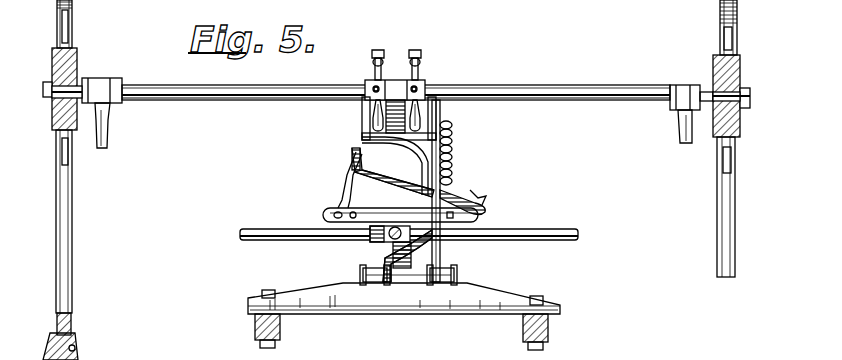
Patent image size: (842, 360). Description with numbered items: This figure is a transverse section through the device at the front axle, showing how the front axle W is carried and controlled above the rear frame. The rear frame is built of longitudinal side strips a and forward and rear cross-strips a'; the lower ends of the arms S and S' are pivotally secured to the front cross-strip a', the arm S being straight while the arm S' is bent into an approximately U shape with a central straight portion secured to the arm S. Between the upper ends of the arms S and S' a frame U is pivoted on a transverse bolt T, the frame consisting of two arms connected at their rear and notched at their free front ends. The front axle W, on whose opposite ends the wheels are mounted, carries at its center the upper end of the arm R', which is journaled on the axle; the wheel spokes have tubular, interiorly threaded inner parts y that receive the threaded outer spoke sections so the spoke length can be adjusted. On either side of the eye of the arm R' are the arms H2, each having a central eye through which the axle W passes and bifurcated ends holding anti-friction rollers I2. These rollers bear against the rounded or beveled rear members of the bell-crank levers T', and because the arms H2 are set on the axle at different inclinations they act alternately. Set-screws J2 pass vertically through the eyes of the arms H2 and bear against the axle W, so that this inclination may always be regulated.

The inner parts of the spokes y is at (75, 18).
The front axle W is at (535, 92).
The arm R' is at (395, 62).
The anti-friction rollers I2 is at (424, 72).
The arms H2 is at (362, 66).
The set-screws J2 is at (370, 88).
The arm S is at (411, 189).
The transverse bolt T is at (438, 155).
The frame U is at (363, 147).
The arm S' is at (339, 180).
The bell-crank levers T' is at (476, 190).
The cross-strips a' is at (409, 272).
The side strips a is at (404, 316).